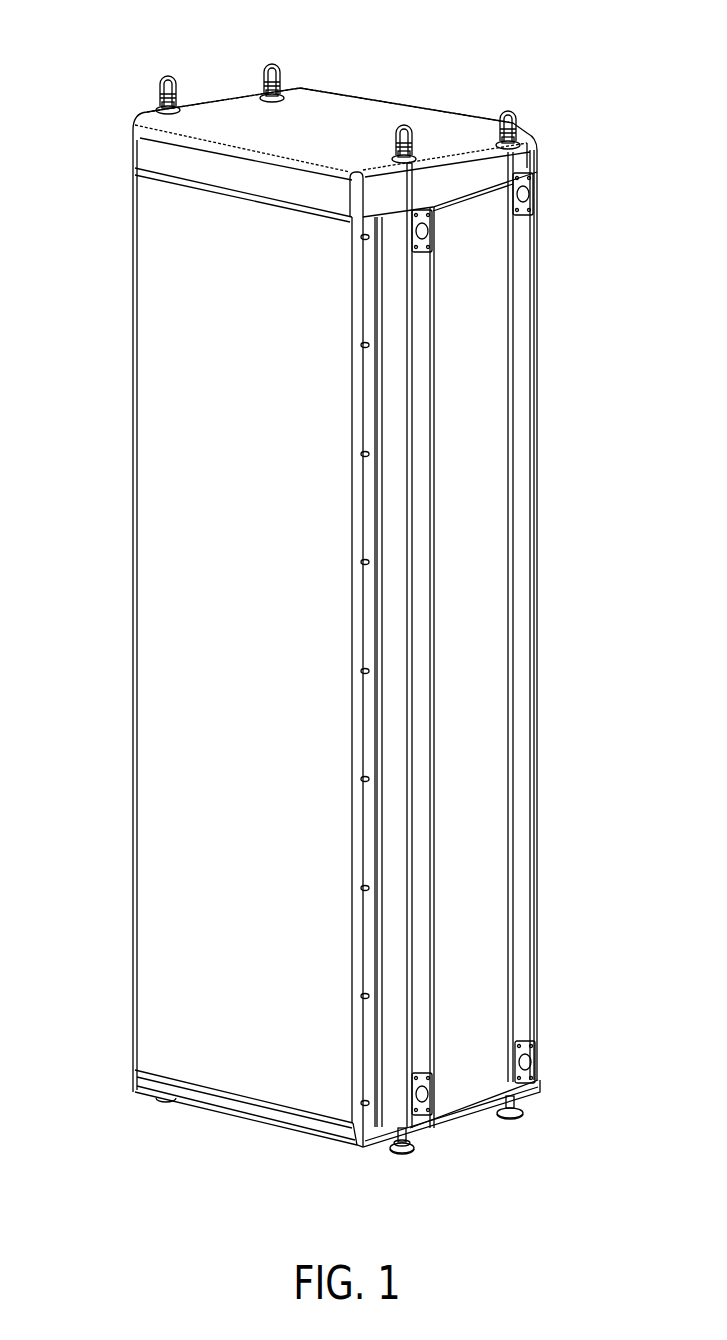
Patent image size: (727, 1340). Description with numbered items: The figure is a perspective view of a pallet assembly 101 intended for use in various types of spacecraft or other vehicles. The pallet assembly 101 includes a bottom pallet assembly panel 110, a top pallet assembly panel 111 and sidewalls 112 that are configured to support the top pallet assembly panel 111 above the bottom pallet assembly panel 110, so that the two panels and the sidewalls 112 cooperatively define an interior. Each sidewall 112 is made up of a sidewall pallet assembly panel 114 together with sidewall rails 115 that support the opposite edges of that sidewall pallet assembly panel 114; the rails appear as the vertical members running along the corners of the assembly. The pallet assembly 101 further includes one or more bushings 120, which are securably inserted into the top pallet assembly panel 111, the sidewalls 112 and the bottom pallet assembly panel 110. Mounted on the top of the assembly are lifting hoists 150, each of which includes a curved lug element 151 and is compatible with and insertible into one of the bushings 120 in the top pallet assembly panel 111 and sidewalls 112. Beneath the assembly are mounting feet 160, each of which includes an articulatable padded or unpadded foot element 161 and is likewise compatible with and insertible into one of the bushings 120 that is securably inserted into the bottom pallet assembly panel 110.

The pallet assembly 101 is at (135, 117).
The bottom pallet assembly panel 110 is at (303, 1117).
The top pallet assembly panel 111 is at (386, 108).
The sidewall 112 is at (215, 567).
The sidewall pallet assembly panel 114 is at (470, 475).
The sidewall rail 115 is at (137, 468).
The bushing 120 is at (433, 230).
The lifting hoist 150 is at (265, 78).
The curved lug element 151 is at (282, 62).
The mounting foot 160 is at (413, 1142).
The articulatable padded/unpadded foot element 161 is at (397, 1152).